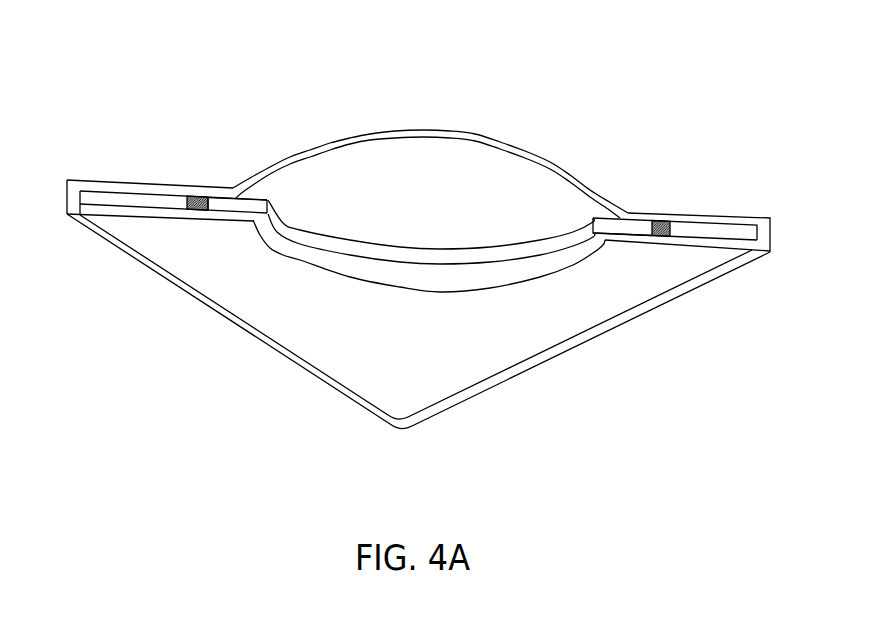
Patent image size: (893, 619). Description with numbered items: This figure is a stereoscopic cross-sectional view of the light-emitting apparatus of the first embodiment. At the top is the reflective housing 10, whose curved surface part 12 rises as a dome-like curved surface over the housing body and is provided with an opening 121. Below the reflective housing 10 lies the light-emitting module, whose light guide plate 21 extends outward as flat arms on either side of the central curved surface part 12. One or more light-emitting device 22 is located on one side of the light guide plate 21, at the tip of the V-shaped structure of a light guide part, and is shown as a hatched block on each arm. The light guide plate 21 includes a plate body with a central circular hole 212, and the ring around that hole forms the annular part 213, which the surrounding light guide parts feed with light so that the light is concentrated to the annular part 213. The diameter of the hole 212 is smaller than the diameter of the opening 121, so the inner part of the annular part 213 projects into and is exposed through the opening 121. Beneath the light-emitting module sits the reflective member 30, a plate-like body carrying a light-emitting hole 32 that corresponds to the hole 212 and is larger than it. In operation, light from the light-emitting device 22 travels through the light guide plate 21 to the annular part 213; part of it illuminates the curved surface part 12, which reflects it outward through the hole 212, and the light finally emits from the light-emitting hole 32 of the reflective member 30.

The reflective housing 10 is at (418, 203).
The curved surface part 12 is at (521, 138).
The opening 121 is at (232, 179).
The light guide plate 21 is at (408, 231).
The hole 212 is at (269, 225).
The annular part 213 is at (262, 189).
The light-emitting device 22 is at (187, 198).
The reflective member 30 is at (172, 255).
The light-emitting hole 32 is at (251, 232).